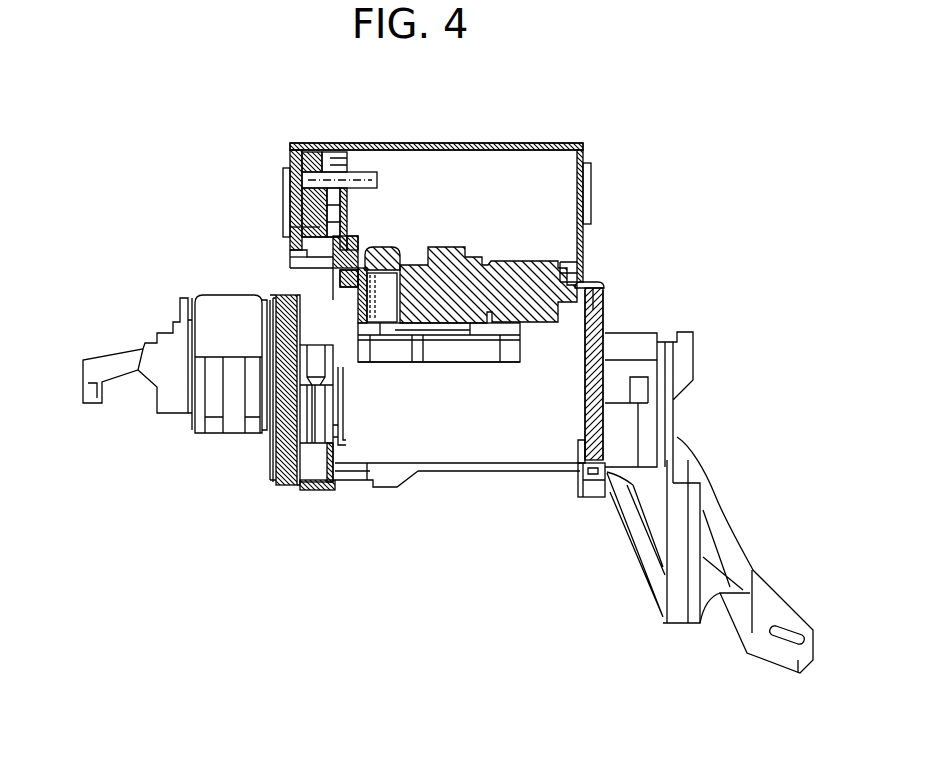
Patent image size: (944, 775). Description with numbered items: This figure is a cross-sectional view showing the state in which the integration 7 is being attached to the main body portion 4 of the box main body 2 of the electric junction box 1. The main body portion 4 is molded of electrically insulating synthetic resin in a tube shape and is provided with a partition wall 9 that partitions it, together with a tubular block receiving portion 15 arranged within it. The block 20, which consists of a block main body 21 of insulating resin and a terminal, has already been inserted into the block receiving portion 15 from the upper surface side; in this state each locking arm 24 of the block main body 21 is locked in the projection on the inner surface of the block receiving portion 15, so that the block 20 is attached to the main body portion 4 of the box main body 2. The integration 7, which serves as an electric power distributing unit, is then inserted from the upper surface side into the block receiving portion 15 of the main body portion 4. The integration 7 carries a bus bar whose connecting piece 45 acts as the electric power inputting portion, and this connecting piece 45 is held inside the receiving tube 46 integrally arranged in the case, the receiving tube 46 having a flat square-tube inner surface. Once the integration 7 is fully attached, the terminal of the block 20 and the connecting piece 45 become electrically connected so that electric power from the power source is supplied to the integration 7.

The electric junction box 1 is at (552, 106).
The box main body 2 is at (280, 128).
The integration 7 is at (462, 142).
The connecting piece 45 is at (290, 227).
The receiving tube 46 is at (297, 258).
The partition wall 9 is at (277, 458).
The block main body 21 is at (335, 393).
The block 20 is at (345, 415).
The block receiving portion 15 is at (343, 432).
The locking arm 24 is at (312, 490).
The main body portion 4 is at (442, 478).